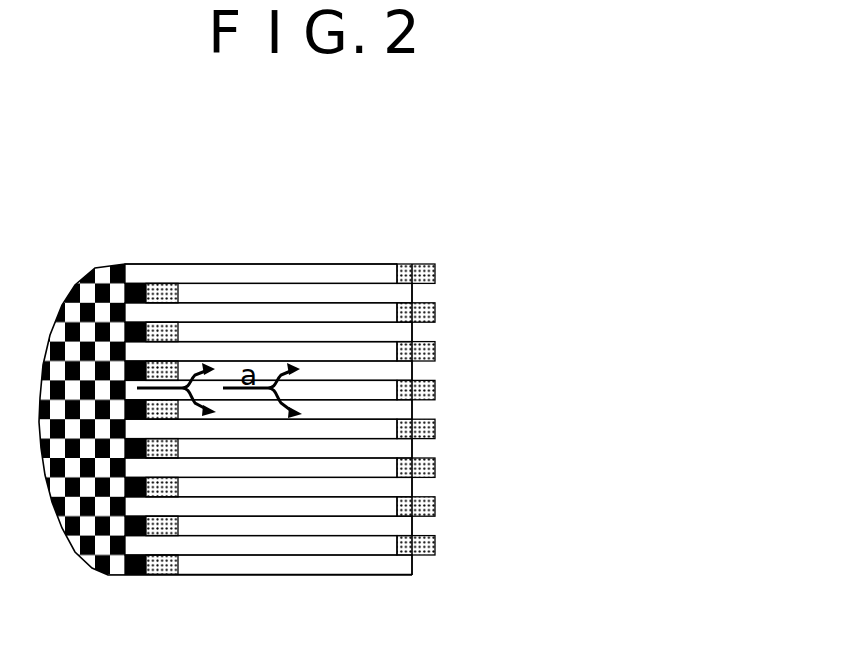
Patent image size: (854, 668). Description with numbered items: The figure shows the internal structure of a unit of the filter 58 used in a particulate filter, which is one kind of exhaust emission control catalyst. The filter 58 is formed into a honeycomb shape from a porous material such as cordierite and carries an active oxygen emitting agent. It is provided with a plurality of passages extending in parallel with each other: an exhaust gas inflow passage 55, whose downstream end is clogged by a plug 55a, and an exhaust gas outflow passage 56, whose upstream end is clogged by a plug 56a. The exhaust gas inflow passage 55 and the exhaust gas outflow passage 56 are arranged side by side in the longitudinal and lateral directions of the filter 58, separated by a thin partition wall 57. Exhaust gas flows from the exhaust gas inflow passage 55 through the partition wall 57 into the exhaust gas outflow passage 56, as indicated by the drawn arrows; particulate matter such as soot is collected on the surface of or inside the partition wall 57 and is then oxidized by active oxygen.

The exhaust gas inflow passage 55 is at (385, 390).
The plug 55a is at (435, 470).
The exhaust gas outflow passage 56 is at (413, 370).
The plug 56a is at (173, 372).
The partition wall 57 is at (348, 352).
The filter 58 is at (358, 237).